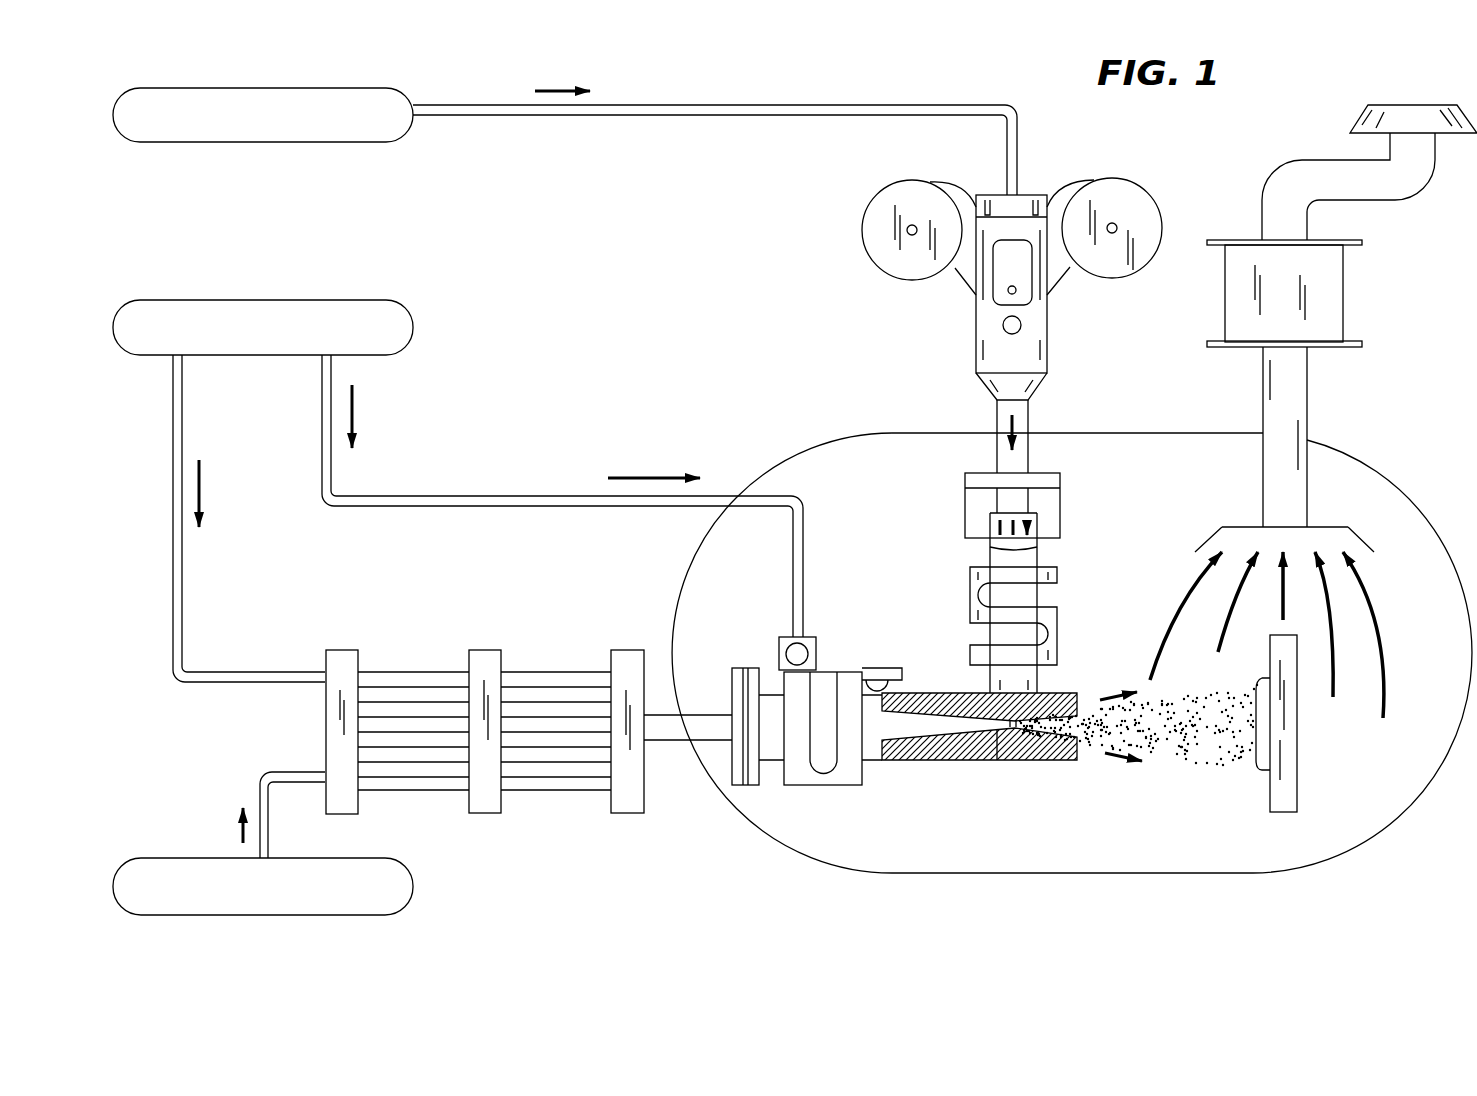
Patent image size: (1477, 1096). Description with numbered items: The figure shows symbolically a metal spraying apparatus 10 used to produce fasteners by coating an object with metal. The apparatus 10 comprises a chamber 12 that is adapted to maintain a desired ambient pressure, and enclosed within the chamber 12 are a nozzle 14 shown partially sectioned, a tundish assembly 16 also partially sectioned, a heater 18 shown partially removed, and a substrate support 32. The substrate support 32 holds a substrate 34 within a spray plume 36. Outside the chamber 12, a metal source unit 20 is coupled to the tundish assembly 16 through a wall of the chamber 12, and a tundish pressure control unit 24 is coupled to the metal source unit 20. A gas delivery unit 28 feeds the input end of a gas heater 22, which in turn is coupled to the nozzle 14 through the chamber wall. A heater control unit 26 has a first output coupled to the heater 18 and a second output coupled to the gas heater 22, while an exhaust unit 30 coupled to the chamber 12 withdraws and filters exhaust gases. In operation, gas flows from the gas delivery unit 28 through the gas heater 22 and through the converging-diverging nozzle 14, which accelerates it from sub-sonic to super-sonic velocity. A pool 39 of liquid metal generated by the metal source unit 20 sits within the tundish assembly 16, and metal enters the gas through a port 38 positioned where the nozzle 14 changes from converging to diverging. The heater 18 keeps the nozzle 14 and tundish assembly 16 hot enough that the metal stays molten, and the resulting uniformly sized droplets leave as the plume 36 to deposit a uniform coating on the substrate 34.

The metal spraying apparatus 10 is at (594, 882).
The chamber 12 is at (965, 878).
The nozzle 14 is at (900, 760).
The tundish assembly 16 is at (1037, 553).
The heater 18 is at (860, 668).
The metal source unit 20 is at (976, 337).
The gas heater 22 is at (490, 650).
The tundish pressure control unit 24 is at (350, 142).
The heater control unit 26 is at (362, 300).
The gas delivery unit 28 is at (163, 858).
The exhaust unit 30 is at (1343, 292).
The substrate support 32 is at (1300, 785).
The substrate 34 is at (1262, 770).
The spray plume 36 is at (1198, 718).
The port 38 is at (997, 760).
The pool 39 is at (1037, 530).